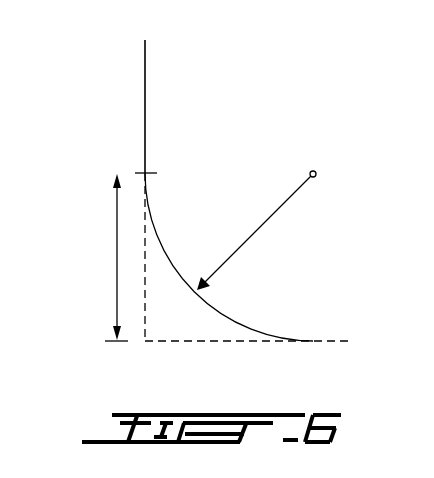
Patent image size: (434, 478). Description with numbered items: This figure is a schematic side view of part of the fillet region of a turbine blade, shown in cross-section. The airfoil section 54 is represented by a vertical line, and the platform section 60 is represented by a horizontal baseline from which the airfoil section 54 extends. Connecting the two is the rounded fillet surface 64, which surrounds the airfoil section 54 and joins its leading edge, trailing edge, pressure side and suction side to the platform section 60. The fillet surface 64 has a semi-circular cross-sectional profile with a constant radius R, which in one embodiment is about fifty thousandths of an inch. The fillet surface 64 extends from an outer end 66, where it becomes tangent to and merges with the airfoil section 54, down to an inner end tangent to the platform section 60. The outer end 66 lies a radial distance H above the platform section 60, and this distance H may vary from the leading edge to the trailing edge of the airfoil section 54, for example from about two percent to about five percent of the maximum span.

The airfoil section 54 is at (147, 73).
The platform section 60 is at (339, 339).
The fillet surface 64 is at (158, 237).
The outer end 66 is at (145, 172).
The radial distance H is at (117, 270).
The radius R is at (276, 210).